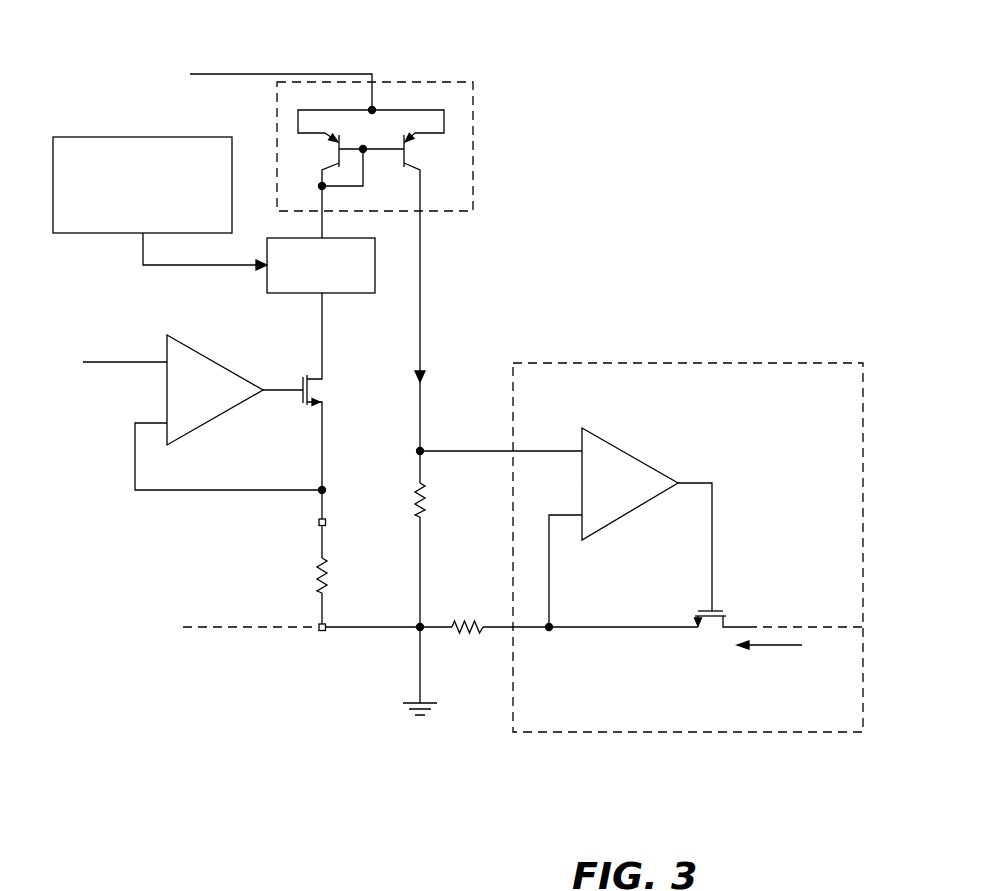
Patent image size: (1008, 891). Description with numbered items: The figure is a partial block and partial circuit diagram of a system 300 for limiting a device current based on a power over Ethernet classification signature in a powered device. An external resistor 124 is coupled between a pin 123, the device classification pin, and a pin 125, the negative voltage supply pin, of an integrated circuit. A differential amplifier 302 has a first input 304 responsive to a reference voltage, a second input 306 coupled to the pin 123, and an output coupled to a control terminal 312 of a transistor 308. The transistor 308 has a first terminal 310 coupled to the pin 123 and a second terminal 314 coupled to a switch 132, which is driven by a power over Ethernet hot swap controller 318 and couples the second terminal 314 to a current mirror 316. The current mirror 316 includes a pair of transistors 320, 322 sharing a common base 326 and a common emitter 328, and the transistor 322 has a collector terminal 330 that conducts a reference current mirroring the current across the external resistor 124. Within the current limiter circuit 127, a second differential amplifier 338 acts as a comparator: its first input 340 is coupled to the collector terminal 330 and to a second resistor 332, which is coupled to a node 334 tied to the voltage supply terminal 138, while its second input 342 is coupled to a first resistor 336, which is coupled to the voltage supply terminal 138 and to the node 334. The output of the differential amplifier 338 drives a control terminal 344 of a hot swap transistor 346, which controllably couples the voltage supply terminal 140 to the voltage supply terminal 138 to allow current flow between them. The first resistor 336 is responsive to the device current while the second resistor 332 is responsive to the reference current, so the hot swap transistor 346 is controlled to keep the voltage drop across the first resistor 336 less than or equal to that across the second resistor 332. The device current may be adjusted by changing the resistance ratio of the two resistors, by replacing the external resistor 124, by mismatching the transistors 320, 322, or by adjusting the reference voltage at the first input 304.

The system 300 is at (640, 133).
The power over Ethernet hot swap controller 318 is at (143, 137).
The current mirror 316 is at (423, 82).
The common emitter 328 is at (408, 110).
The transistor 320 is at (312, 150).
The transistor 322 is at (430, 150).
The common base 326 is at (376, 152).
The switch 132 is at (267, 290).
The differential amplifier 302 is at (193, 430).
The first input 304 is at (130, 362).
The second input 306 is at (178, 490).
The control terminal 312 is at (280, 387).
The second terminal 314 is at (323, 355).
The transistor 308 is at (334, 389).
The first terminal 310 is at (322, 452).
The pin 123 is at (327, 521).
The external resistor 124 is at (327, 574).
The pin 125 is at (319, 633).
The collector terminal 330 is at (421, 292).
The first input 340 is at (447, 451).
The second resistor 332 is at (425, 507).
The node 334 is at (415, 632).
The voltage supply terminal 138 is at (653, 628).
The first resistor 336 is at (453, 622).
The current limiter circuit 127 is at (688, 363).
The differential amplifier 338 is at (620, 450).
The second input 342 is at (550, 588).
The control terminal 344 is at (712, 537).
The voltage supply terminal 140 is at (740, 628).
The hot swap transistor 346 is at (713, 640).